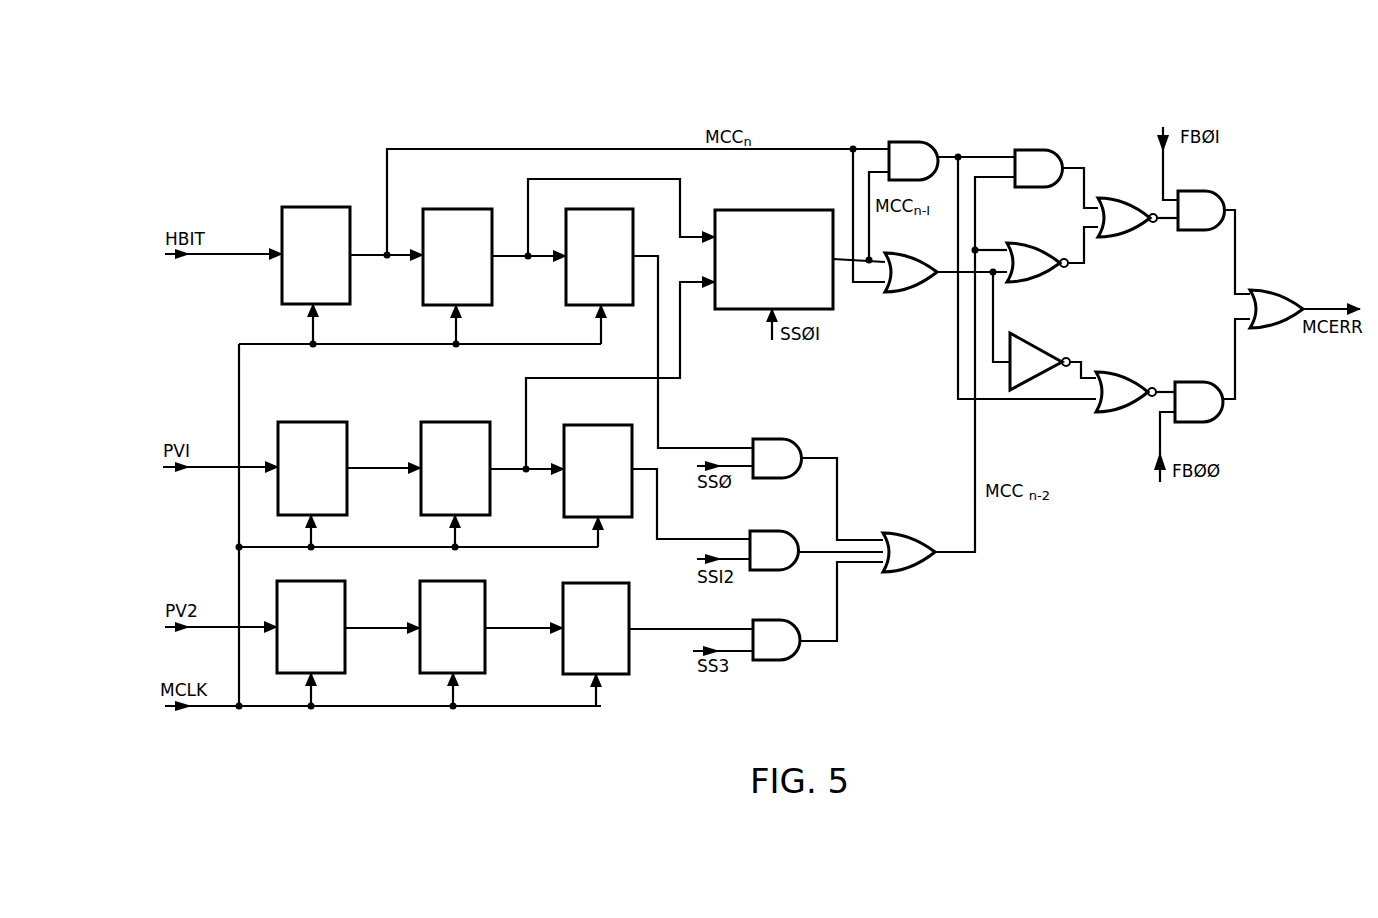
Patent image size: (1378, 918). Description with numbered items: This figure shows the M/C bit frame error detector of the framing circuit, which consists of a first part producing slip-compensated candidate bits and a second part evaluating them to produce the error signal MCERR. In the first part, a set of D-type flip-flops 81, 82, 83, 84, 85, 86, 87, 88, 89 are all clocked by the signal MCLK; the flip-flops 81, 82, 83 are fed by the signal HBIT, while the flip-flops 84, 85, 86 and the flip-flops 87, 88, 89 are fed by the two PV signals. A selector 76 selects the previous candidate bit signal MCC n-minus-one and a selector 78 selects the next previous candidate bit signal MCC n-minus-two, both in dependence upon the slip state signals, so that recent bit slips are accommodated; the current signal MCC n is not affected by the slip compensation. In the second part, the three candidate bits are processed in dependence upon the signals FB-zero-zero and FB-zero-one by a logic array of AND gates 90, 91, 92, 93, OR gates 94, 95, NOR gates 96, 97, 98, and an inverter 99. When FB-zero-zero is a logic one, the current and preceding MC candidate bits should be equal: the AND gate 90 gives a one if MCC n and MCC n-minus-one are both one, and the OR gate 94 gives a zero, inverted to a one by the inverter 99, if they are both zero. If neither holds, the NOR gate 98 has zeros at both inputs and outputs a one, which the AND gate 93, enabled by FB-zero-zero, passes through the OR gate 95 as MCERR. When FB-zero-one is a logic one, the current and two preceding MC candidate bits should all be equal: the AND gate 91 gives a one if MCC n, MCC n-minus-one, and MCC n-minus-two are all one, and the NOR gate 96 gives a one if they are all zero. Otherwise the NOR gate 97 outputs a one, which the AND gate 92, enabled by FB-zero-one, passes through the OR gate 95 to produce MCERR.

The selector 76 is at (779, 210).
The selector 78 is at (862, 599).
The D-type flip-flop 81 is at (282, 287).
The D-type flip-flop 82 is at (423, 288).
The D-type flip-flop 83 is at (566, 288).
The D-type flip-flop 84 is at (347, 499).
The D-type flip-flop 85 is at (490, 500).
The D-type flip-flop 86 is at (564, 508).
The D-type flip-flop 87 is at (345, 657).
The D-type flip-flop 88 is at (485, 657).
The D-type flip-flop 89 is at (562, 666).
The AND gate 90 is at (920, 143).
The AND gate 91 is at (1050, 150).
The AND gate 92 is at (1210, 192).
The AND gate 93 is at (1196, 382).
The OR gate 94 is at (905, 293).
The OR gate 95 is at (1272, 290).
The NOR gate 96 is at (1046, 229).
The NOR gate 97 is at (1123, 198).
The NOR gate 98 is at (1120, 373).
The inverter 99 is at (1040, 343).